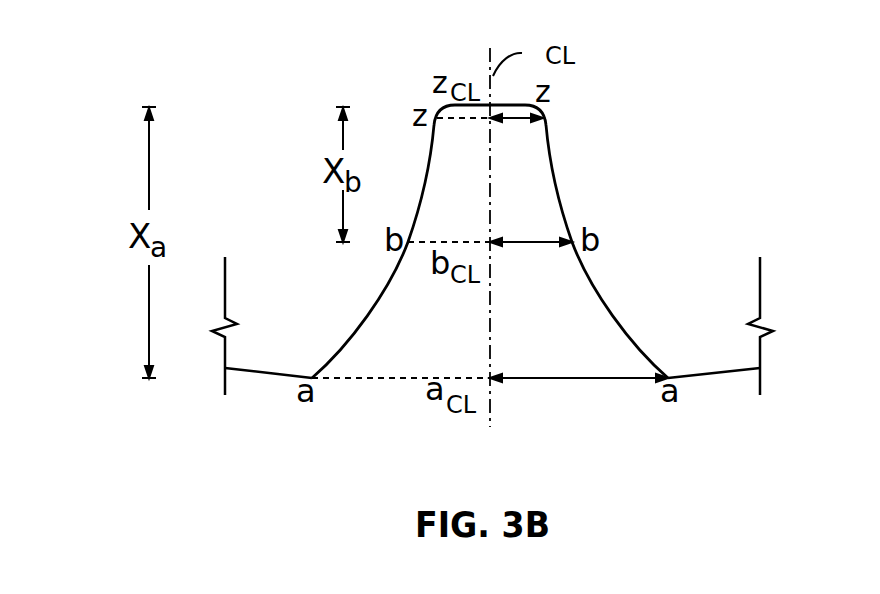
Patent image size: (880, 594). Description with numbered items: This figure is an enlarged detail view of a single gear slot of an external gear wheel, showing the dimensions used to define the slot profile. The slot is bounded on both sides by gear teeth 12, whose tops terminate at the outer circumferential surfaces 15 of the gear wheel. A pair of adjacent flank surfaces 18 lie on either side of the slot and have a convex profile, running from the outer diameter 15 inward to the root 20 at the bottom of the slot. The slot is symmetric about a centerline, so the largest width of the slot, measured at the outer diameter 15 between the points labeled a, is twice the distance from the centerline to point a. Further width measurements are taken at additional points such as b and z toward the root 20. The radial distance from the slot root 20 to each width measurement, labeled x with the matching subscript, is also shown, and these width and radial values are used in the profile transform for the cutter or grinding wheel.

The gear teeth 12 is at (492, 326).
The outer circumferential surface 15 is at (256, 374).
The flank surfaces 18 is at (381, 302).
The root 20 is at (484, 108).